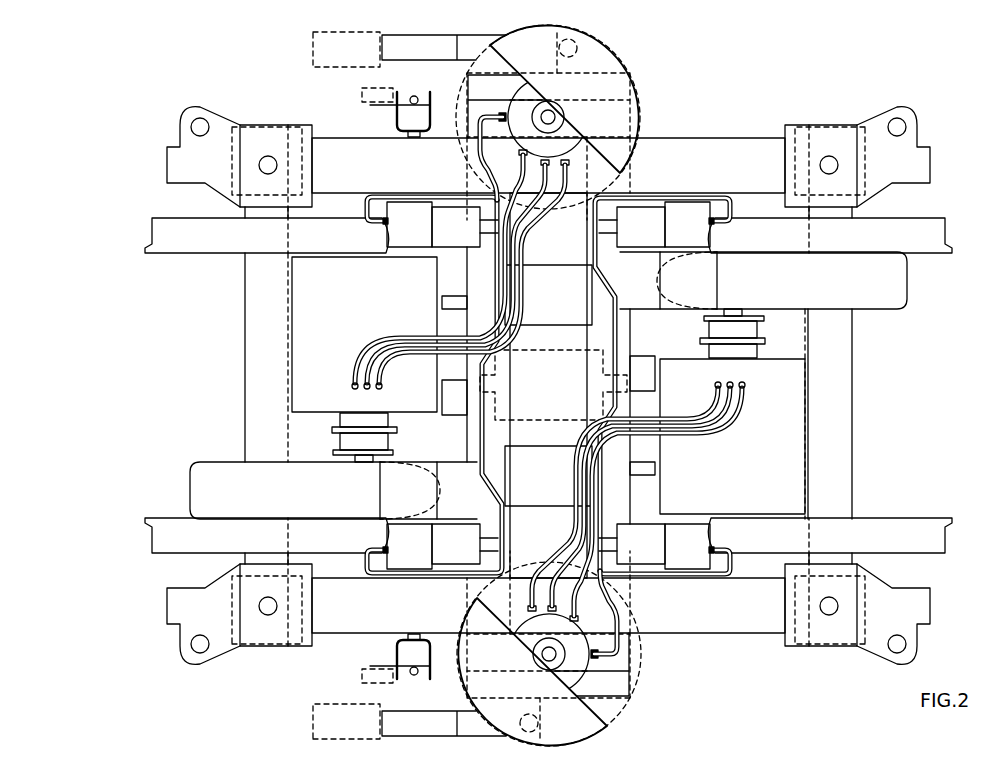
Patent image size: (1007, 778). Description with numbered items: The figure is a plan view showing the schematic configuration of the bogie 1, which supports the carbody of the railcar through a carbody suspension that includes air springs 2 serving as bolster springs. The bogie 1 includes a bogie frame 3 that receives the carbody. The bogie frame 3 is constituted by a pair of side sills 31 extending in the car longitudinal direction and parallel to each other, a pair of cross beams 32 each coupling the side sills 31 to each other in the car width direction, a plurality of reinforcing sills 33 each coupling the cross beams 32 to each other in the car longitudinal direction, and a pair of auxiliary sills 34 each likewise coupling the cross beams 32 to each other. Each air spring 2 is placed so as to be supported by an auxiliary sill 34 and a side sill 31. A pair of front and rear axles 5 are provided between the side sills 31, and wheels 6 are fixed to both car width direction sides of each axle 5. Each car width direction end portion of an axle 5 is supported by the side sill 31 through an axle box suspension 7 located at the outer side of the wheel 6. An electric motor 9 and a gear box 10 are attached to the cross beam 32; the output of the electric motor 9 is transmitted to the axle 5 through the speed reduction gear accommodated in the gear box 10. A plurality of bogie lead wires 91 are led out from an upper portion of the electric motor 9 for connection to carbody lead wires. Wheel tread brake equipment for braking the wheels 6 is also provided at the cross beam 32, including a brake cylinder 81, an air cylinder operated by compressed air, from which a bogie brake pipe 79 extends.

The bogie 1 is at (970, 75).
The air spring 2 is at (614, 56).
The bogie frame 3 is at (748, 97).
The axle 5 is at (245, 340).
The wheel 6 is at (152, 234).
The axle box suspension 7 is at (268, 130).
The electric motor 9 is at (338, 339).
The gear box 10 is at (190, 484).
The side sill 31 is at (705, 138).
The cross beam 32 is at (467, 425).
The reinforcing sill 33 is at (550, 262).
The auxiliary sill 34 is at (472, 115).
The bogie brake pipe 79 is at (372, 197).
The brake cylinder 81 is at (418, 236).
The bogie lead wire 91 is at (385, 342).